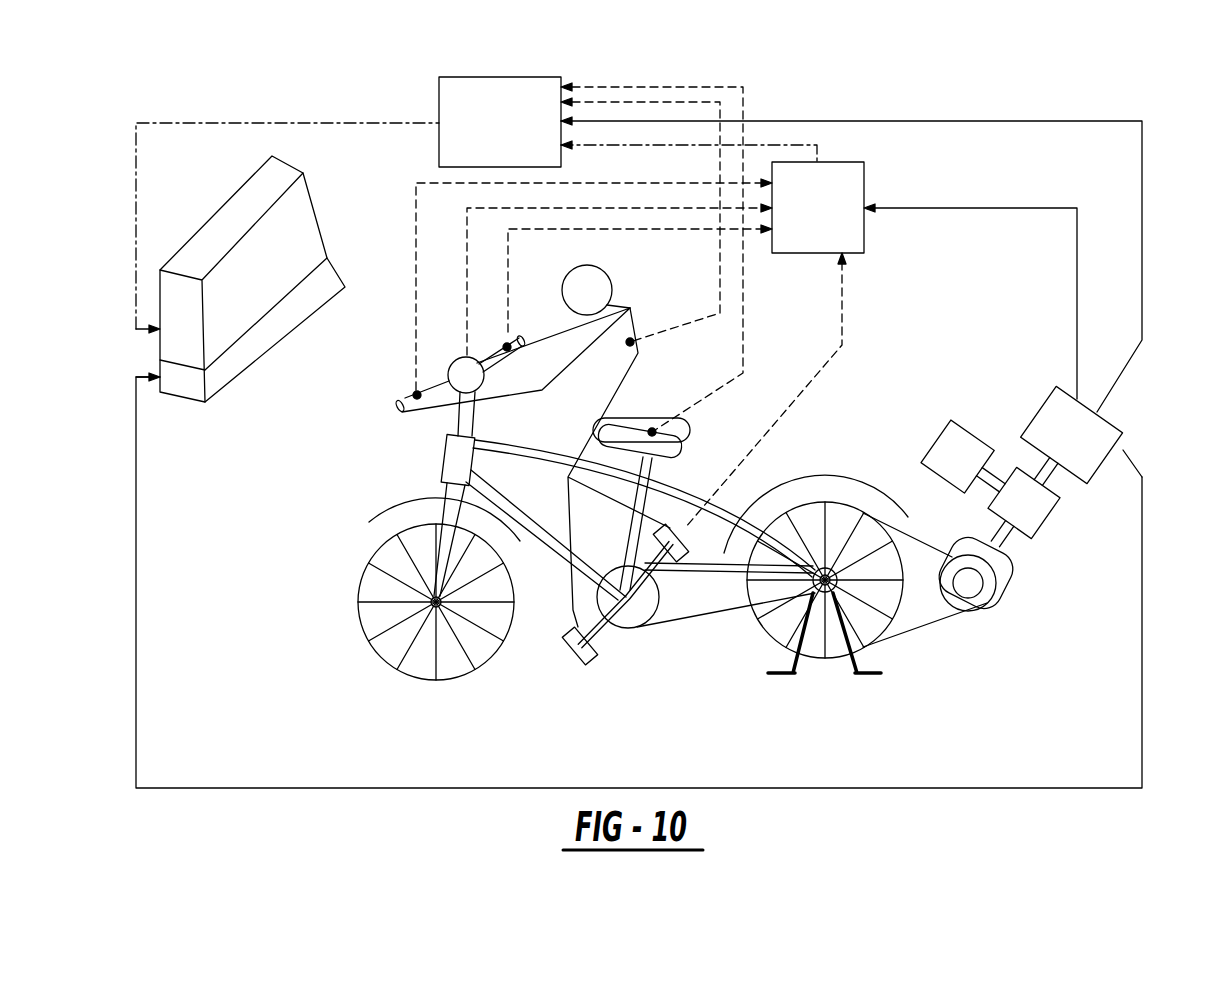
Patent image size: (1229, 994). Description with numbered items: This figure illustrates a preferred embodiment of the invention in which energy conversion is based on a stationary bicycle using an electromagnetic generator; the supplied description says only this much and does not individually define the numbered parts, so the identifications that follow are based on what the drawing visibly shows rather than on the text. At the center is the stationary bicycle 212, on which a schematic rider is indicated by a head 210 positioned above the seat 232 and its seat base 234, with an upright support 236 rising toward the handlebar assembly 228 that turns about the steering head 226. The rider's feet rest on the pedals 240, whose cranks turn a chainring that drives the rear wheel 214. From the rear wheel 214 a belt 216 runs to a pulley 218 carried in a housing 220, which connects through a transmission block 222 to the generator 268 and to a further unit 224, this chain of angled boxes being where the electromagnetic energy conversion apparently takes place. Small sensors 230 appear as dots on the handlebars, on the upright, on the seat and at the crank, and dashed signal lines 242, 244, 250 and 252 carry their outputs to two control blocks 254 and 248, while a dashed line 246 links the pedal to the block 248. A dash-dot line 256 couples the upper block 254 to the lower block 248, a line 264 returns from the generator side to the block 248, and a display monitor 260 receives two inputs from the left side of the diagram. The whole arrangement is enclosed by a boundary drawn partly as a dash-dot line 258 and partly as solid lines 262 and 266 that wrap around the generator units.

The user head 210 is at (593, 268).
The bicycle 212 is at (333, 486).
The rear wheel 214 is at (767, 638).
The drive belt 216 is at (913, 630).
The pulley 218 is at (977, 597).
The pulley housing 220 is at (1012, 568).
The transmission unit 222 is at (1052, 518).
The resistance unit 224 is at (1125, 418).
The steering head 226 is at (462, 381).
The handlebar assembly 228 is at (512, 365).
The sensors 230 is at (417, 395).
The seat 232 is at (692, 427).
The seat base 234 is at (680, 452).
The support post 236 is at (627, 345).
The pedals 240 is at (568, 660).
The steering sensor line 242 is at (468, 230).
The sensor lines 244 is at (417, 277).
The pedal sensor line 246 is at (778, 414).
The controller 248 is at (788, 253).
The sensor line 250 is at (705, 315).
The seat sensor line 252 is at (705, 397).
The computer 254 is at (499, 77).
The connection line 256 is at (817, 152).
The system boundary 258 is at (328, 122).
The display monitor 260 is at (310, 318).
The enclosure boundary 262 is at (1143, 672).
The feedback line 264 is at (1077, 303).
The connection line 266 is at (1142, 268).
The generator 268 is at (932, 440).